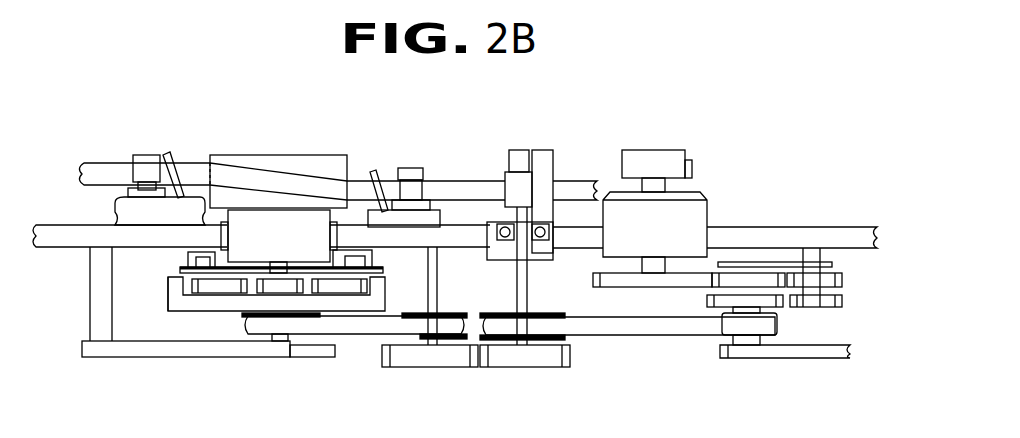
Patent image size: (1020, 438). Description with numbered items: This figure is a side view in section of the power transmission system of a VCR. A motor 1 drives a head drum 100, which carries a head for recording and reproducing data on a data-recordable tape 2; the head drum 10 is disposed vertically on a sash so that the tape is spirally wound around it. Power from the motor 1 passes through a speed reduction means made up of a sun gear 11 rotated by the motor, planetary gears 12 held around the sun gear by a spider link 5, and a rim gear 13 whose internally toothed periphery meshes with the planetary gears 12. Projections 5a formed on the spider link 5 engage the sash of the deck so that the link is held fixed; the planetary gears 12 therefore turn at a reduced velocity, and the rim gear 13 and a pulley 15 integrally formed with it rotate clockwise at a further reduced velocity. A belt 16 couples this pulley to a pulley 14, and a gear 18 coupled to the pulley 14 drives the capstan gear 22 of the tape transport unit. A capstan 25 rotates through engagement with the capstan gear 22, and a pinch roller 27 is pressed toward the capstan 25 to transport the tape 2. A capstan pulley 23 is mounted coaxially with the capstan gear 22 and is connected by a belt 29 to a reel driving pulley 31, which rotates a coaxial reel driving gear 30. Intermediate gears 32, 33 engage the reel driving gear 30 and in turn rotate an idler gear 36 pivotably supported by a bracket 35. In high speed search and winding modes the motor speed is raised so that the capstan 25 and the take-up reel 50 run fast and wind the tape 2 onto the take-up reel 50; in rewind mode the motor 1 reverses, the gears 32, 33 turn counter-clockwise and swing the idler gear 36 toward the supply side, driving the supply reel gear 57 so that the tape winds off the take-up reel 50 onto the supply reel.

The motor 1 is at (290, 250).
The tape 2 is at (433, 181).
The spider link 5 is at (384, 272).
The projections 5a is at (190, 265).
The head drum 10 is at (142, 338).
The sun gear 11 is at (270, 293).
The planetary gears 12 is at (205, 286).
The rim gear 13 is at (170, 297).
The pulley 14 is at (440, 315).
The pulley 15 is at (310, 343).
The belt 16 is at (358, 321).
The gear 18 is at (440, 360).
The capstan gear 22 is at (522, 360).
The capstan pulley 23 is at (537, 315).
The capstan 25 is at (522, 150).
The pinch roller 27 is at (506, 188).
The belt 29 is at (637, 336).
The reel driving gear 30 is at (763, 303).
The reel driving pulley 31 is at (727, 346).
The intermediate gear 32 is at (822, 307).
The intermediate gear 33 is at (836, 282).
The bracket 35 is at (770, 263).
The idler gear 36 is at (740, 287).
The take-up reel 50 is at (690, 213).
The supply reel gear 57 is at (637, 284).
The head drum 100 is at (290, 158).